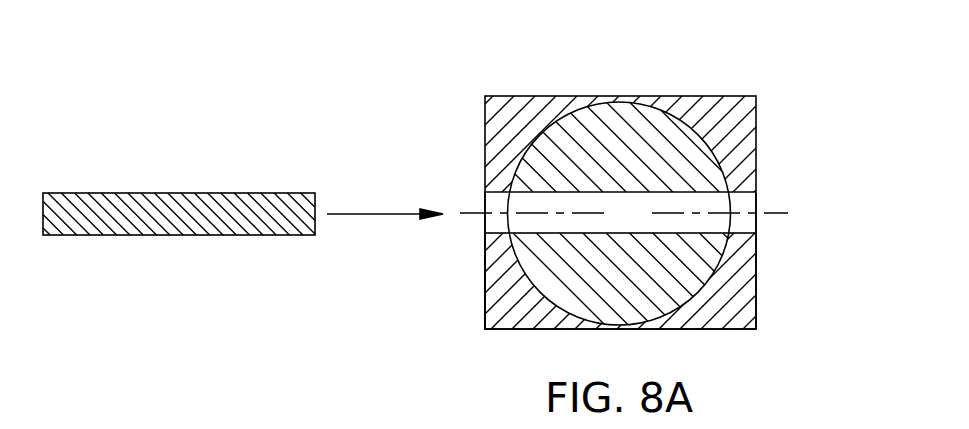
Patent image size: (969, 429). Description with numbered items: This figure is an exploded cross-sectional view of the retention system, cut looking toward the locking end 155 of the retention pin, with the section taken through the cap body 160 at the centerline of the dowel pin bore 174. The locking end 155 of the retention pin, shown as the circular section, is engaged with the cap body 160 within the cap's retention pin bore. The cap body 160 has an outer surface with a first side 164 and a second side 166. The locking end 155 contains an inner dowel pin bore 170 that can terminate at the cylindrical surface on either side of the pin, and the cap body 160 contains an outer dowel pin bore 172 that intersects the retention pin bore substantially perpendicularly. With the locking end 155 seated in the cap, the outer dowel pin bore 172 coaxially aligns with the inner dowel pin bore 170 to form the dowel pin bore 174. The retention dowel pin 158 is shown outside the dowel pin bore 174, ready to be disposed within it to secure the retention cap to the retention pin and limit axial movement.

The locking end 155 is at (622, 105).
The retention dowel pin 158 is at (189, 211).
The cap body 160 is at (745, 300).
The first side 164 is at (466, 289).
The second side 166 is at (778, 258).
The inner dowel pin bore 170 is at (520, 201).
The outer dowel pin bore 172 is at (743, 205).
The dowel pin bore 174 is at (647, 224).